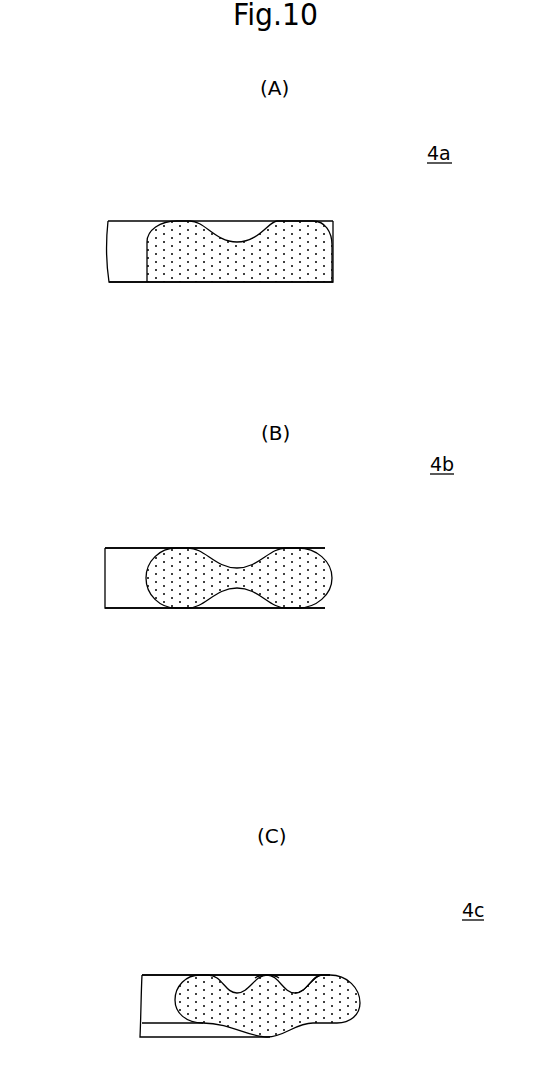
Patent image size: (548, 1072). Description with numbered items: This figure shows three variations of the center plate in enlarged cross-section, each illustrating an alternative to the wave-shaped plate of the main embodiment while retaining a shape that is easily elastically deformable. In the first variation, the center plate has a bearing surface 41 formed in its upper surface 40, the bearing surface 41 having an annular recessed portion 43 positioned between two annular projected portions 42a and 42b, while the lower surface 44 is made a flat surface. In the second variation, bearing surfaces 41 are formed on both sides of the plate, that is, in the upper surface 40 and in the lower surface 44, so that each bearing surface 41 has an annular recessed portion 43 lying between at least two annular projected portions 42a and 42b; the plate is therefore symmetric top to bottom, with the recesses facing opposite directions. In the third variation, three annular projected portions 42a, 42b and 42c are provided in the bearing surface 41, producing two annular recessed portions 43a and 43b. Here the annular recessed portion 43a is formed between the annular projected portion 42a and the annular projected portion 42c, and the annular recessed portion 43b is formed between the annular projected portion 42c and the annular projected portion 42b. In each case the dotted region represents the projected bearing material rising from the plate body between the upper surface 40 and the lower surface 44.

The upper surface 40 is at (115, 221).
The bearing surface 41 is at (138, 221).
The annular projected portion 42a is at (295, 221).
The annular projected portion 42b is at (178, 221).
The annular projected portion 42c is at (267, 975).
The annular recessed portion 43 is at (240, 232).
The annular recessed portion 43a is at (295, 988).
The annular recessed portion 43b is at (237, 988).
The lower surface 44 is at (233, 283).